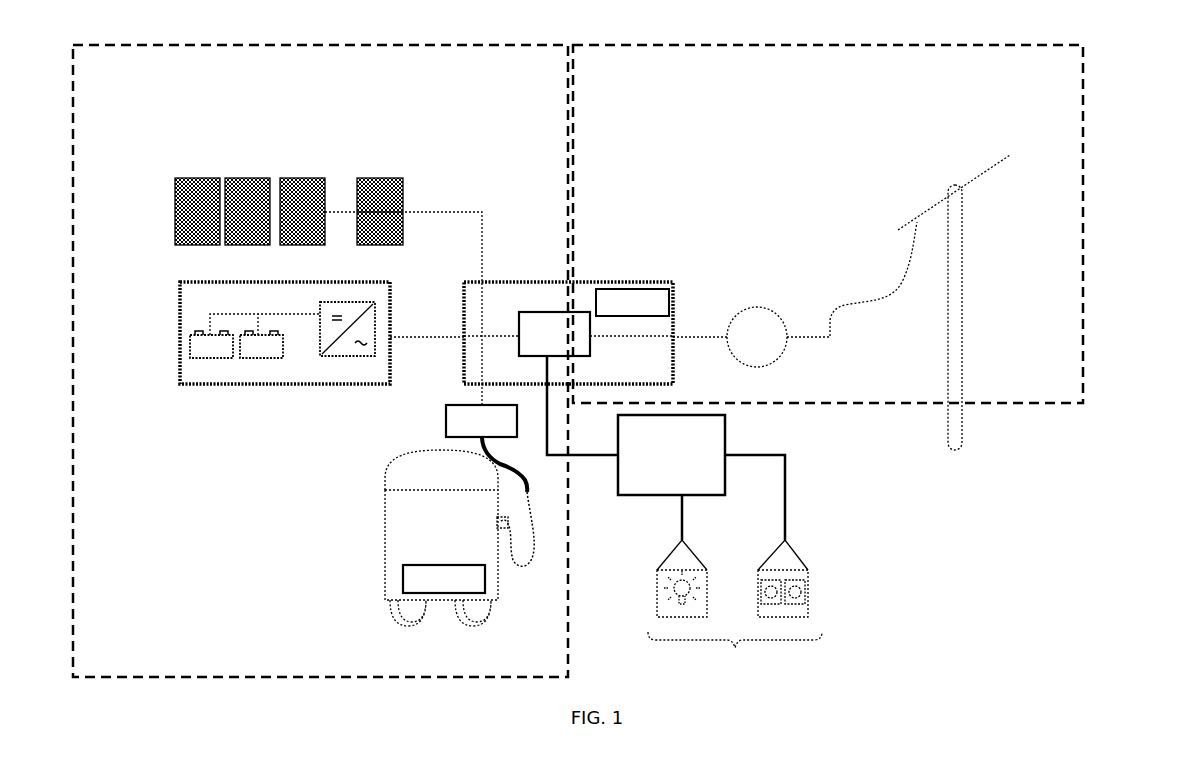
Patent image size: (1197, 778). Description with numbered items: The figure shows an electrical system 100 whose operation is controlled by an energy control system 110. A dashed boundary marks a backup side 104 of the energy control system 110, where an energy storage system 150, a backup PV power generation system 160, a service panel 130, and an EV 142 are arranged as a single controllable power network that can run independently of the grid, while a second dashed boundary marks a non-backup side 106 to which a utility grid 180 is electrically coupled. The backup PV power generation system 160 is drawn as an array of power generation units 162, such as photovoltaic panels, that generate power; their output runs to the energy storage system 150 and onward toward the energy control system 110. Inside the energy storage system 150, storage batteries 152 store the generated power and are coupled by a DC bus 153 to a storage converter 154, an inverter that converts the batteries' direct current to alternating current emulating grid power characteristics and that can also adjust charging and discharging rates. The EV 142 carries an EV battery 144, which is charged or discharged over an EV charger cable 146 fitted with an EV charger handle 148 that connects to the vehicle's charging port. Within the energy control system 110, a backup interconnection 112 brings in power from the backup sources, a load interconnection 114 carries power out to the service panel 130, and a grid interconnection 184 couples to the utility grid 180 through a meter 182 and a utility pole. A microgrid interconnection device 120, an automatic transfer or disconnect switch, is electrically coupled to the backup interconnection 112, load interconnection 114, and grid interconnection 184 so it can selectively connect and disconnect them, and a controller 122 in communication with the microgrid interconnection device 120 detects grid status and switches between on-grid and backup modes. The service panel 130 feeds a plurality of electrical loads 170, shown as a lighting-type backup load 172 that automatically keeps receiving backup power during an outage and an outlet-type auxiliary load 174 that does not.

The electrical system 100 is at (770, 104).
The backup side 104 is at (73, 583).
The non-backup side 106 is at (1083, 97).
The energy control system 110 is at (568, 339).
The backup interconnection 112 is at (497, 333).
The load interconnection 114 is at (545, 370).
The microgrid interconnection device 120 is at (590, 348).
The controller 122 is at (652, 289).
The service panel 130 is at (725, 440).
The EV 142 is at (435, 515).
The EV battery 144 is at (403, 580).
The EV charger cable 146 is at (523, 572).
The EV charger handle 148 is at (497, 525).
The energy storage system 150 is at (322, 385).
The storage batteries 152 is at (215, 384).
The DC bus 153 is at (222, 314).
The storage converter 154 is at (350, 360).
The backup PV power generation system 160 is at (321, 245).
The power generation unit 162 is at (196, 178).
The plurality of electrical loads 170 is at (735, 572).
The backup loads 172 is at (668, 553).
The auxiliary loads 174 is at (800, 556).
The utility grid 180 is at (841, 278).
The meter 182 is at (757, 305).
The grid interconnection 184 is at (693, 335).